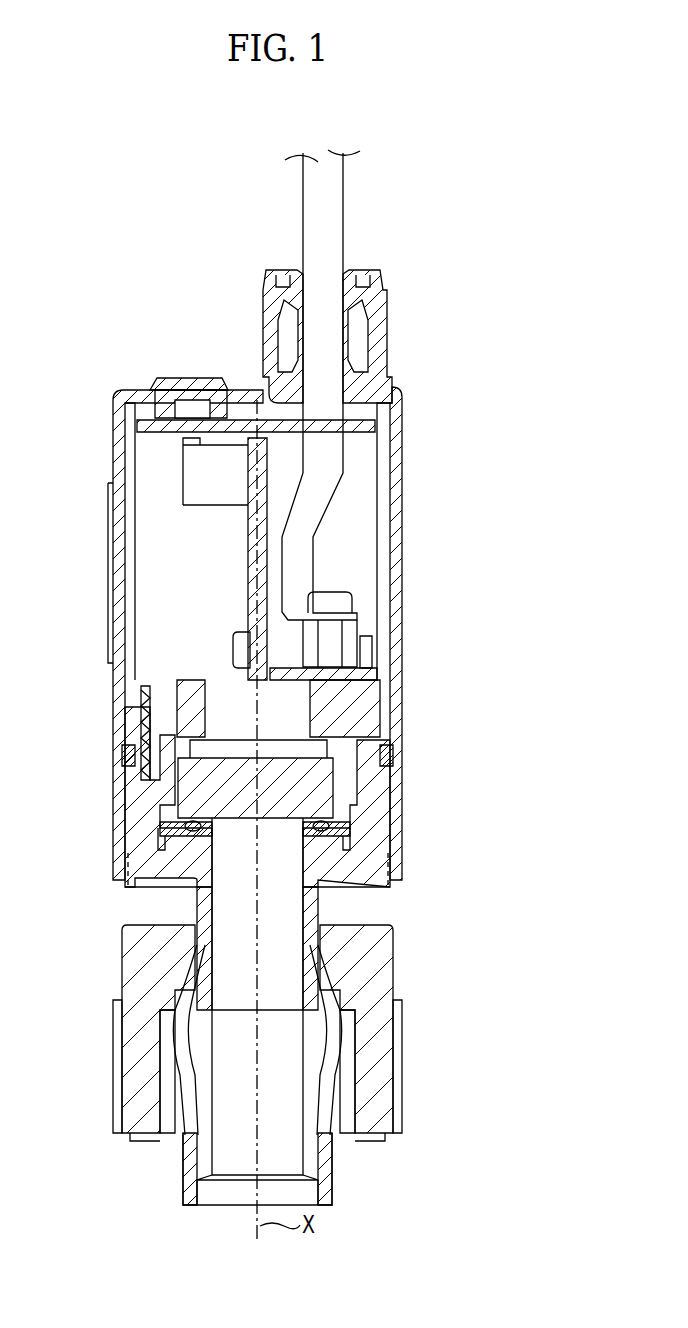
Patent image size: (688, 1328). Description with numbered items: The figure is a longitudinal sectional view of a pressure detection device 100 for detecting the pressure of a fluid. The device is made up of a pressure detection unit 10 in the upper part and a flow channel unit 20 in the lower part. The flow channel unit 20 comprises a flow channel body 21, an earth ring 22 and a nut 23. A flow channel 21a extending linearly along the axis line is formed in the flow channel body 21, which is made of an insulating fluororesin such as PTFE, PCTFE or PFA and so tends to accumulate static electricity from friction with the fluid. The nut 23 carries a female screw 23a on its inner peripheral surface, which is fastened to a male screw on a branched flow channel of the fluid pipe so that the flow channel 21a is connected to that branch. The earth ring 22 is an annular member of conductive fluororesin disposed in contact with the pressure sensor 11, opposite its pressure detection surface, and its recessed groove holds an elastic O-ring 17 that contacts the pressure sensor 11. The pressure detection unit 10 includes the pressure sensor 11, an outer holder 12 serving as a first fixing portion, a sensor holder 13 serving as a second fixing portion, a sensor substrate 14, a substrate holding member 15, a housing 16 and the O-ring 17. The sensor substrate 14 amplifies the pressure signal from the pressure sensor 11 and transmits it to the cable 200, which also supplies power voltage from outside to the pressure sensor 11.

The pressure detection device 100 is at (466, 220).
The cable 200 is at (303, 189).
The pressure detection unit 10 is at (119, 390).
The pressure sensor 11 is at (252, 758).
The outer holder 12 is at (372, 740).
The sensor holder 13 is at (386, 688).
The sensor substrate 14 is at (248, 578).
The substrate holding member 15 is at (378, 680).
The housing 16 is at (402, 598).
The O-ring 17 is at (193, 821).
The flow channel unit 20 is at (404, 852).
The flow channel body 21 is at (320, 905).
The flow channel 21a is at (300, 963).
The earth ring 22 is at (158, 830).
The nut 23 is at (122, 960).
The female screw 23a is at (340, 1033).